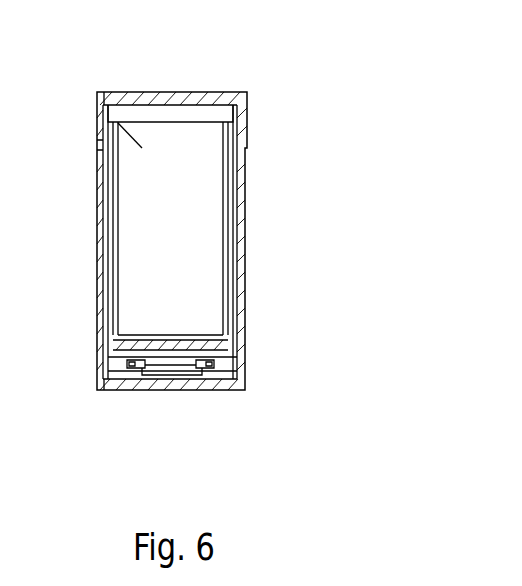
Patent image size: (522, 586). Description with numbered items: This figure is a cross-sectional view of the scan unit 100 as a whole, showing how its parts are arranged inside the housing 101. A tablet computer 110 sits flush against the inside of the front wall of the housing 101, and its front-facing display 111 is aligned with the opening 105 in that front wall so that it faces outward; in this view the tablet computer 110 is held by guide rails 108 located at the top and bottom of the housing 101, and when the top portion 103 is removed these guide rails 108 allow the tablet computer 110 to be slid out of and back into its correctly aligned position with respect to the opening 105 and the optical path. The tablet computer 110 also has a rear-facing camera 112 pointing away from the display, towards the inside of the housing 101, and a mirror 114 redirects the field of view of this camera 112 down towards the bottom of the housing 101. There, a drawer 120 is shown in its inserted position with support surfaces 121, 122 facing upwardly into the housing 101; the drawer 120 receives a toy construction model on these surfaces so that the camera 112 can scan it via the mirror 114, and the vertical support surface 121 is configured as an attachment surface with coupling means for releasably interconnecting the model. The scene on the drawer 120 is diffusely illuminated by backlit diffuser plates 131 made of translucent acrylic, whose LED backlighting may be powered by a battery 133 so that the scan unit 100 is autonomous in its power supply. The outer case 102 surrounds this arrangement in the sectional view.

The battery 100 is at (77, 88).
The housing 101 is at (328, 397).
The case 102 is at (241, 258).
The top portion 103 is at (242, 127).
The opening 105 is at (103, 247).
The guide rails 108 is at (108, 112).
The tablet computer 110 is at (116, 307).
The front-facing display 111 is at (109, 282).
The rear-facing camera 112 is at (117, 123).
The mirror 114 is at (135, 127).
The drawer 120 is at (172, 342).
The vertical support surface 121 is at (140, 340).
The support surface 122 is at (185, 340).
The backlit diffuser plates 131 is at (123, 240).
The battery 133 is at (160, 366).